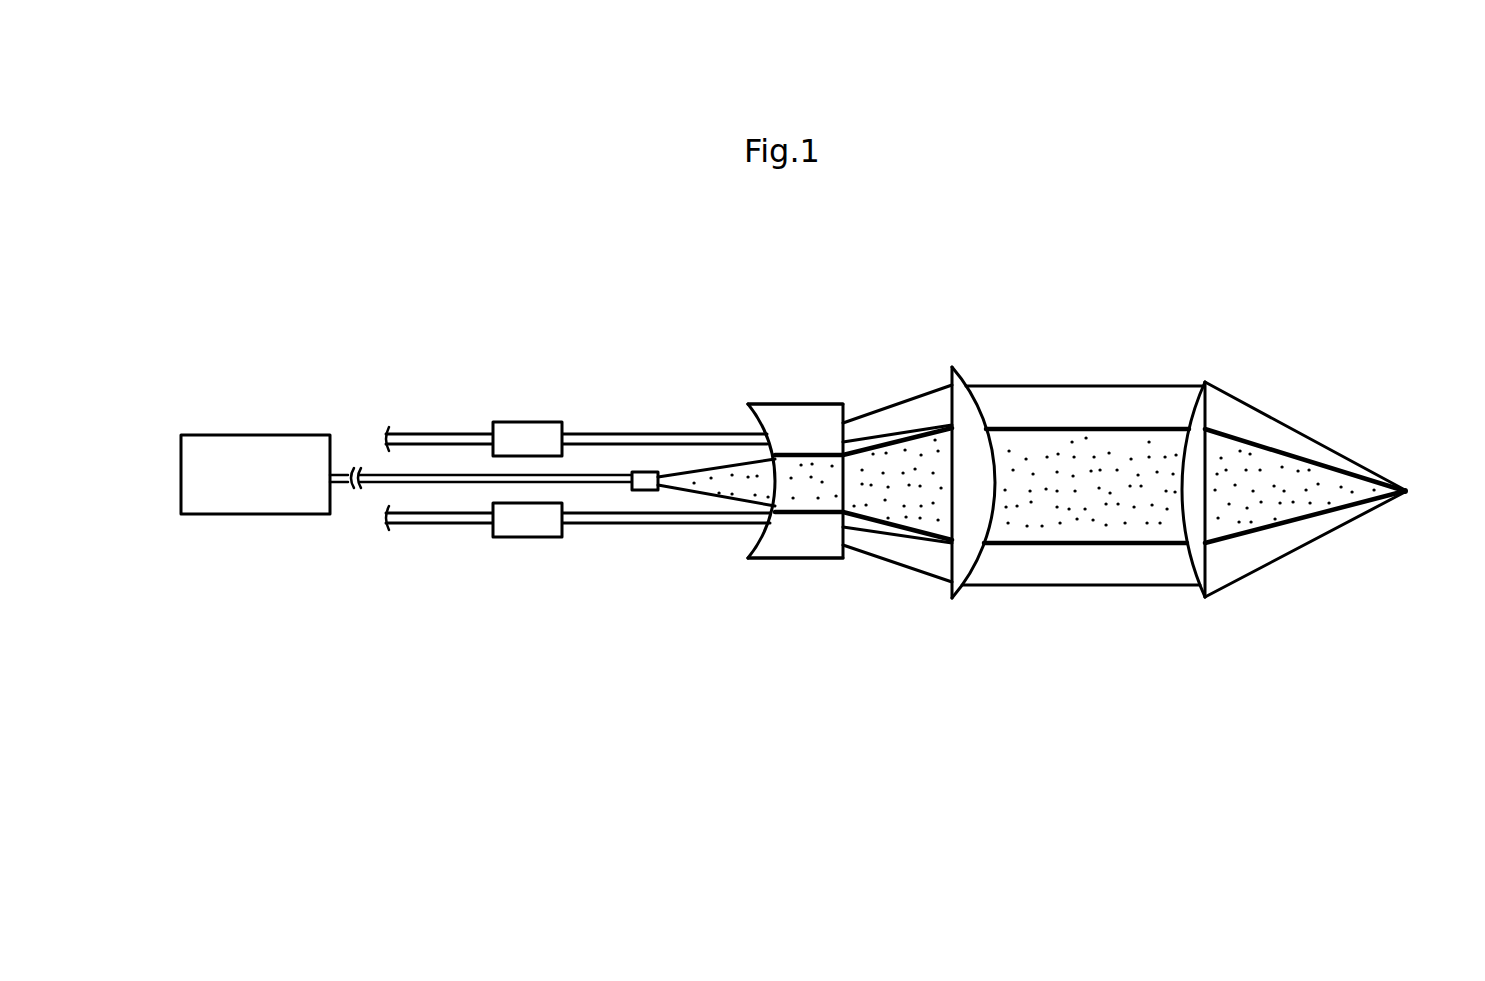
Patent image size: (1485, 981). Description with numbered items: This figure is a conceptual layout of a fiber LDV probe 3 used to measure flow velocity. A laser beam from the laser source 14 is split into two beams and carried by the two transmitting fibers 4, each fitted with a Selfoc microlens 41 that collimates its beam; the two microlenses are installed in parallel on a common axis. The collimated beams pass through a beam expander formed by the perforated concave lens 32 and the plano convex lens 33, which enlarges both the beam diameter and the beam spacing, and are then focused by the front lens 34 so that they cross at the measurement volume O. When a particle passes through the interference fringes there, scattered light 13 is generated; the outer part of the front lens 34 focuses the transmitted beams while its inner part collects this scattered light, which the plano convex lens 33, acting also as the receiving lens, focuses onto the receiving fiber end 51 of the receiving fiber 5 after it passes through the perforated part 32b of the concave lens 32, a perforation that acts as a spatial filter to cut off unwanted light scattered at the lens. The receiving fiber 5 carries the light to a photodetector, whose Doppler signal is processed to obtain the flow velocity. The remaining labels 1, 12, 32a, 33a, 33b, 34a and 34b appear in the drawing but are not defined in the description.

The illumination device 1 is at (76, 302).
The fiber LDV probe 3 is at (620, 300).
The transmitting fibers 4 is at (415, 432).
The receiving fiber 5 is at (369, 490).
The illuminating light beam 12 is at (598, 430).
The scattered light 13 is at (714, 493).
The laser source 14 is at (181, 486).
The perforated concave lens 32 is at (765, 478).
The flat surfaces of concave lens 32a is at (770, 407).
The perforated part of the lens 32b is at (782, 503).
The plano convex lens 33 is at (991, 465).
The convex surface of first convex lens 33a is at (982, 400).
The flat surface of first convex lens 33b is at (985, 500).
The front lens 34 is at (1266, 501).
The flat surface of second convex lens 34a is at (1205, 412).
The convex surface of second convex lens 34b is at (1201, 500).
The Selfoc microlens 41 is at (514, 422).
The end of the receiving fiber 51 is at (640, 492).
The measurement volume O is at (1410, 491).